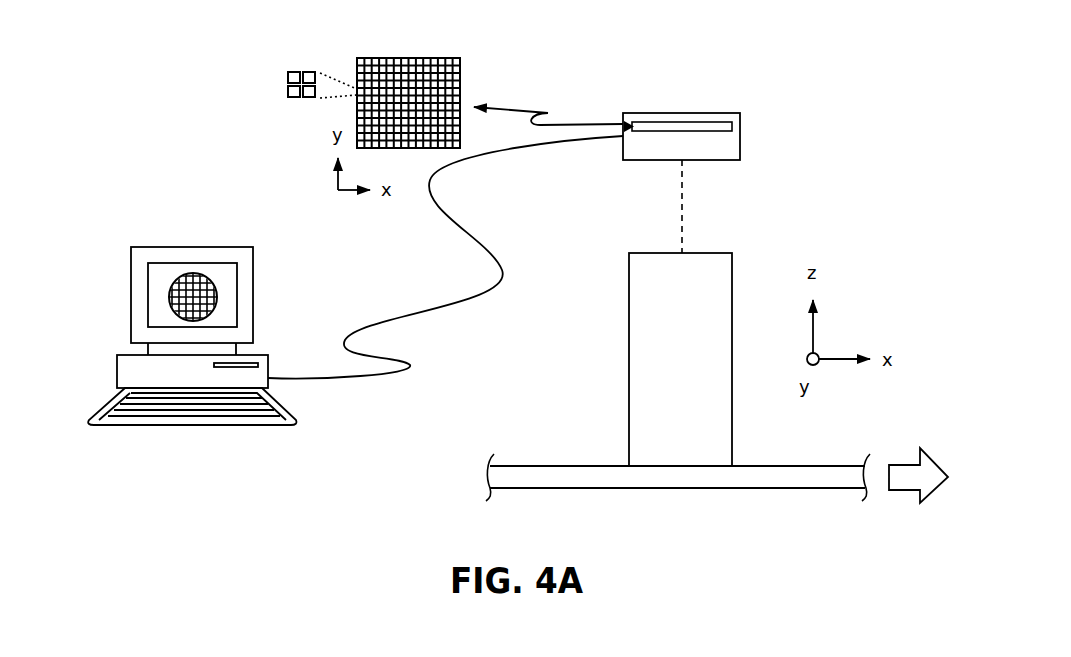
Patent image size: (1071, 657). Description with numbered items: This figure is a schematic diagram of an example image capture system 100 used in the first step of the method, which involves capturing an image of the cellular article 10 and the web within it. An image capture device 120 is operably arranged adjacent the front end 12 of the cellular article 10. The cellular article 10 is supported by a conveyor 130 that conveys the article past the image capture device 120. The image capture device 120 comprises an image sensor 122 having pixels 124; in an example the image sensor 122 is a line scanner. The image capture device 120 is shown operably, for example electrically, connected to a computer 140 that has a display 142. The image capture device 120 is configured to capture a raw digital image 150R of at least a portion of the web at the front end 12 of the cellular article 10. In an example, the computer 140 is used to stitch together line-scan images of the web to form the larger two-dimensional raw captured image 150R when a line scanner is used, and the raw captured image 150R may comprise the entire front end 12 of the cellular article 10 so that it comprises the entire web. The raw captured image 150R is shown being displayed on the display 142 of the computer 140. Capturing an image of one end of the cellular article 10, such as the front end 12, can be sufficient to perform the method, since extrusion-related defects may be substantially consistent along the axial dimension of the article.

The image capture system 100 is at (797, 55).
The cellular article 10 is at (739, 243).
The front end 12 is at (651, 253).
The image capture device 120 is at (741, 128).
The image sensor 122 is at (710, 122).
The pixels 124 is at (288, 79).
The conveyor 130 is at (540, 466).
The computer 140 is at (181, 310).
The display 142 is at (253, 263).
The raw captured image 150R is at (170, 299).